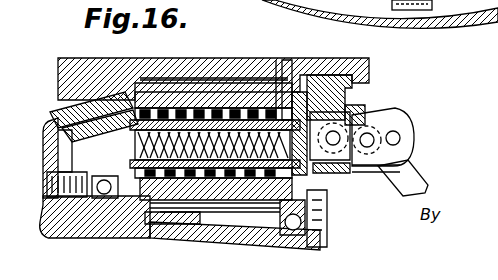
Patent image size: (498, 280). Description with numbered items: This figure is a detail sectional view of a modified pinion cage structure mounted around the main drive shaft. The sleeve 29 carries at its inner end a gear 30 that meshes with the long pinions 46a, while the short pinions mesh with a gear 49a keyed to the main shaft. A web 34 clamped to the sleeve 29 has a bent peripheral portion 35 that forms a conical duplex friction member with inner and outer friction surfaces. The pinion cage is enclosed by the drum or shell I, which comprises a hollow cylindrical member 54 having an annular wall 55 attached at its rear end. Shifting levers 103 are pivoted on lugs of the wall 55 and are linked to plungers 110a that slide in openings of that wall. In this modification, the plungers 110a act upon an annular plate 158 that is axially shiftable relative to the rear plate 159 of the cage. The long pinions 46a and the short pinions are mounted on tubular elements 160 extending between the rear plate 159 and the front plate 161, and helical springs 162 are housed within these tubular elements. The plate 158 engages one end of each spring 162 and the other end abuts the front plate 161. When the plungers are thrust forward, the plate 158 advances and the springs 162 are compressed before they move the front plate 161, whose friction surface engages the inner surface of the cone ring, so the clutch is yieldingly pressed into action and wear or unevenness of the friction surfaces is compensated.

The sleeve 29 is at (62, 218).
The gear 30 is at (162, 224).
The web 34 is at (46, 134).
The bent peripheral portion 35 is at (90, 122).
The long pinions 46a is at (268, 112).
The gear 49a is at (212, 222).
The hollow cylindrical member 54 is at (332, 62).
The wall 55 is at (343, 87).
The shifting levers 103 is at (408, 160).
The plungers 110a is at (354, 114).
The annular plate 158 is at (338, 172).
The rear plate 159 is at (288, 76).
The tubular elements 160 is at (200, 105).
The front plate 161 is at (148, 95).
The helical springs 162 is at (240, 100).
The pinion cage drum or shell I is at (281, 62).